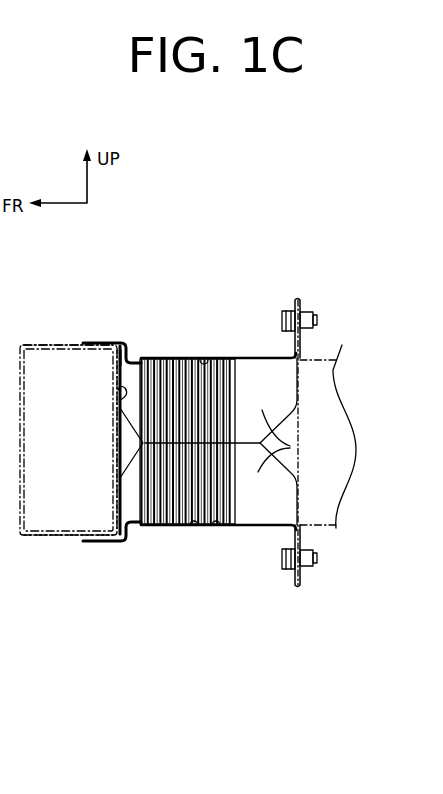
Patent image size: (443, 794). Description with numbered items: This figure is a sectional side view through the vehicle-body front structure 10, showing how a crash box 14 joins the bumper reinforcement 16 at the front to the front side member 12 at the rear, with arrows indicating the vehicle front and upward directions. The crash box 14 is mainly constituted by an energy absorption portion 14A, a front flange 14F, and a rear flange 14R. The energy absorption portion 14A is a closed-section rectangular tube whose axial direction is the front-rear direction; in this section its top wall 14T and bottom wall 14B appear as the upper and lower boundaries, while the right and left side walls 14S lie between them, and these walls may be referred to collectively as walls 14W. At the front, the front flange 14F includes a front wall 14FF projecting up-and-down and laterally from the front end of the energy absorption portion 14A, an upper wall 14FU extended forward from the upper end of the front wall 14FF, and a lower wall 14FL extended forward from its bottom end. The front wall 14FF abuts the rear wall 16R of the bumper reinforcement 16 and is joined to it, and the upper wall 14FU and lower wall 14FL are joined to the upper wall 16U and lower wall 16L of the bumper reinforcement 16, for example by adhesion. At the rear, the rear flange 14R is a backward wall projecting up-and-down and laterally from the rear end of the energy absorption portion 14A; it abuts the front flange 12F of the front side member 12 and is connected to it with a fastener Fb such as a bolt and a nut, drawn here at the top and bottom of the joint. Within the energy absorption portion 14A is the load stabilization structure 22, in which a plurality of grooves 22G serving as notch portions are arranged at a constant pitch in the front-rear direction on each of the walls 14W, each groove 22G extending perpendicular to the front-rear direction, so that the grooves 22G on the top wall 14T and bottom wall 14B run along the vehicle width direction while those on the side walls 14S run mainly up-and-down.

The vehicle-body front structure 10 is at (280, 210).
The front side member 12 is at (329, 351).
The front flange of the front side member 12F is at (303, 310).
The crash box 14 is at (270, 296).
The energy absorption portion 14A is at (188, 333).
The top wall 14T is at (240, 357).
The bottom wall 14B is at (228, 527).
The side wall 14S is at (288, 443).
The walls 14W is at (233, 487).
The rear flange 14R is at (291, 585).
The front flange 14F is at (131, 541).
The upper wall of the front flange 14FU is at (92, 340).
The lower wall of the front flange 14FL is at (90, 545).
The front wall of the front flange 14FF is at (118, 355).
The bumper reinforcement 16 is at (35, 545).
The upper wall of the bumper reinforcement 16U is at (37, 345).
The lower wall of the bumper reinforcement 16L is at (62, 540).
The rear wall of the bumper reinforcement 16R is at (115, 400).
The load stabilization structure 22 is at (241, 498).
The groove 22G is at (200, 368).
The fastener Fb is at (290, 308).